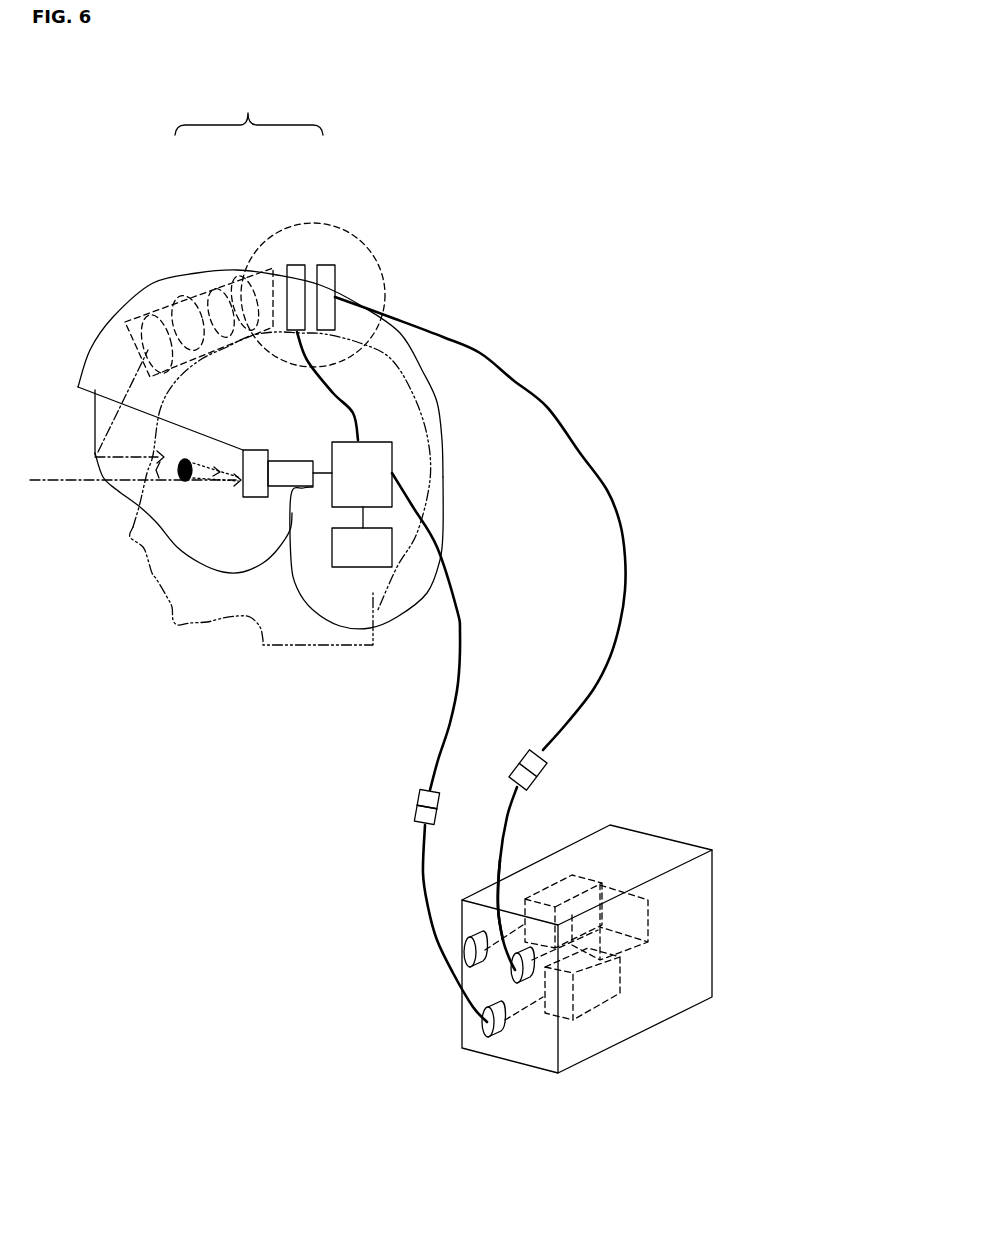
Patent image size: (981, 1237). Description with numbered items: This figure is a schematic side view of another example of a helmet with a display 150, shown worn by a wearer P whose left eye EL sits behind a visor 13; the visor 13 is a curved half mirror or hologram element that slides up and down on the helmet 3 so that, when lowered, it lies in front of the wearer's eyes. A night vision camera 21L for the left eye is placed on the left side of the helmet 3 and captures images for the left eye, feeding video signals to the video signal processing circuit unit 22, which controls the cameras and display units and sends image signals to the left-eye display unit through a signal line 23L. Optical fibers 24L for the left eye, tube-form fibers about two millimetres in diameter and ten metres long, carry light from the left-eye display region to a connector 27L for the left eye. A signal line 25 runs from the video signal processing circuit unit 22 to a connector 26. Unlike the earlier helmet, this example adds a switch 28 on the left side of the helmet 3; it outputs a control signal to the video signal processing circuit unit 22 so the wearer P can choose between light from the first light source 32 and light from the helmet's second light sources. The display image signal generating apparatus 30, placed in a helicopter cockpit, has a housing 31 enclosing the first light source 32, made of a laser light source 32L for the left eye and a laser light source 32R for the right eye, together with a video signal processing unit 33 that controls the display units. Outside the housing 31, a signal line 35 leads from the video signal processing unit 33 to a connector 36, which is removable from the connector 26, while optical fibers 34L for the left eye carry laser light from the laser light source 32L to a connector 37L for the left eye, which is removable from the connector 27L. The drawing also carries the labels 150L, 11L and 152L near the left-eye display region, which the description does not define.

The helmet with a display 150 is at (495, 146).
The left image display unit 150L is at (249, 109).
The left lens unit 11L is at (215, 308).
The left display element 152L is at (320, 223).
The visor 13 is at (95, 430).
The left eye EL is at (198, 480).
The wearer P is at (192, 593).
The night vision camera for the left eye 21L is at (253, 483).
The helmet 3 is at (327, 587).
The video signal processing circuit unit 22 is at (377, 460).
The switch 28 is at (365, 560).
The signal line 23L is at (348, 423).
The optical fibers for the left eye 24L is at (563, 420).
The signal line 25 is at (463, 667).
The connector 26 is at (418, 797).
The connector 36 is at (413, 810).
The optical fibers for the left eye 34L is at (503, 833).
The signal line 35 is at (432, 922).
The connector for the left eye 27L is at (538, 767).
The connector for the left eye 37L is at (533, 780).
The display image signal generating apparatus 30 is at (662, 942).
The housing 31 is at (647, 852).
The first light source 32 is at (670, 914).
The laser light source for the right eye 32R is at (578, 883).
The laser light source for the left eye 32L is at (632, 927).
The video signal processing unit 33 is at (607, 983).